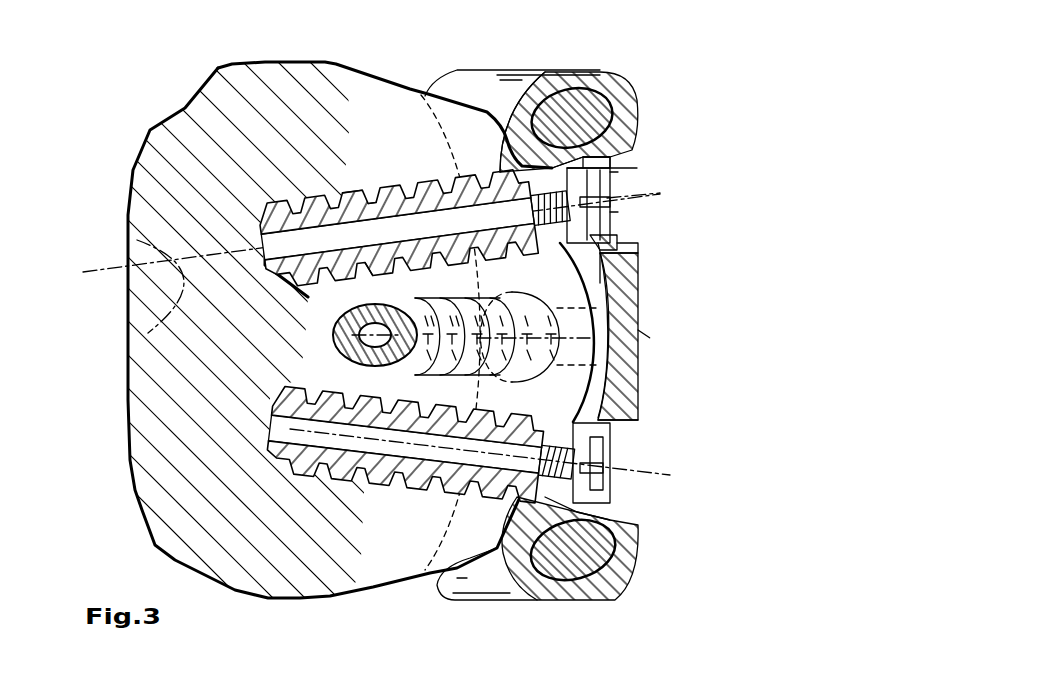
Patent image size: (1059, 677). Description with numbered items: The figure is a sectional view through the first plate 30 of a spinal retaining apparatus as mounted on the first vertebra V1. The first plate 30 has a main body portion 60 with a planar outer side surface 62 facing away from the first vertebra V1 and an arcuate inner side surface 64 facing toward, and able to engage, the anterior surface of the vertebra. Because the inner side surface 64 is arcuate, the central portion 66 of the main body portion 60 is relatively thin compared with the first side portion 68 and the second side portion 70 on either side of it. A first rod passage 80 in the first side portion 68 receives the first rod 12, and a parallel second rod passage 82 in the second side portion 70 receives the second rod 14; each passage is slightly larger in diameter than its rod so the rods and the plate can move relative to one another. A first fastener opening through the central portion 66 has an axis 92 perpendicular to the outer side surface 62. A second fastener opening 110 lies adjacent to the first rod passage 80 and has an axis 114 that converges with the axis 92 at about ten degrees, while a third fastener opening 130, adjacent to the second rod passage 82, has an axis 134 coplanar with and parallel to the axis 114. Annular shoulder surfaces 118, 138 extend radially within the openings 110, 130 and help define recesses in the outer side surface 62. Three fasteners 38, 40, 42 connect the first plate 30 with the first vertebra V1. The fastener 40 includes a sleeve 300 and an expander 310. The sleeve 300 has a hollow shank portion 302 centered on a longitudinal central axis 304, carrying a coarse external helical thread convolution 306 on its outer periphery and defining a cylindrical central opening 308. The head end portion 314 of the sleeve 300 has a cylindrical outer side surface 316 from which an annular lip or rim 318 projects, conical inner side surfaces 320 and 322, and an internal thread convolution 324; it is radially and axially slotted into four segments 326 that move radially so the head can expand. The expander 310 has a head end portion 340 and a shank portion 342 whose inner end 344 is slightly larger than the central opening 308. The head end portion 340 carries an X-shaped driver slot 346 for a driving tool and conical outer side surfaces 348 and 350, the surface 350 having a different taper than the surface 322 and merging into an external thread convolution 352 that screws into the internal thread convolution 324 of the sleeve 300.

The first vertebra V1 is at (478, 338).
The first rod 12 is at (578, 140).
The second rod 14 is at (583, 555).
The first plate 30 is at (634, 342).
The fastener 38 is at (330, 342).
The fastener 40 is at (341, 190).
The fastener 42 is at (403, 482).
The main body portion 60 is at (625, 373).
The planar outer side surface 62 is at (640, 407).
The arcuate inner side surface 64 is at (583, 388).
The central portion 66 is at (625, 393).
The first side portion 68 is at (470, 70).
The second side portion 70 is at (520, 603).
The first rod passage 80 is at (553, 86).
The second rod passage 82 is at (573, 574).
The axis of first fastener opening 92 is at (645, 335).
The second fastener opening 110 is at (662, 161).
The axis of second fastener opening 114 is at (122, 235).
The annular shoulder surface 118 is at (636, 240).
The third fastener opening 130 is at (522, 474).
The axis of third fastener opening 134 is at (648, 473).
The annular shoulder surface 138 is at (593, 506).
The sleeve 300 is at (413, 174).
The shank portion 302 is at (397, 200).
The longitudinal central axis 304 is at (147, 300).
The coarse external helical thread convolution 306 is at (377, 188).
The cylindrical central opening 308 is at (292, 285).
The expander 310 is at (409, 245).
The head end portion 314 is at (545, 150).
The cylindrical outer side surface 316 is at (578, 92).
The annular lip or rim 318 is at (598, 158).
The conical inner side surface 320 is at (613, 187).
The conical inner side surface 322 is at (612, 200).
The internal thread convolution 324 is at (520, 127).
The segments 326 is at (612, 178).
The head end portion 340 is at (622, 207).
The shank portion 342 is at (365, 250).
The inner end 344 is at (323, 222).
The X-shaped driver slot 346 is at (613, 222).
The conical outer side surface 348 is at (615, 288).
The conical outer side surface 350 is at (535, 240).
The external thread convolution 352 is at (520, 245).